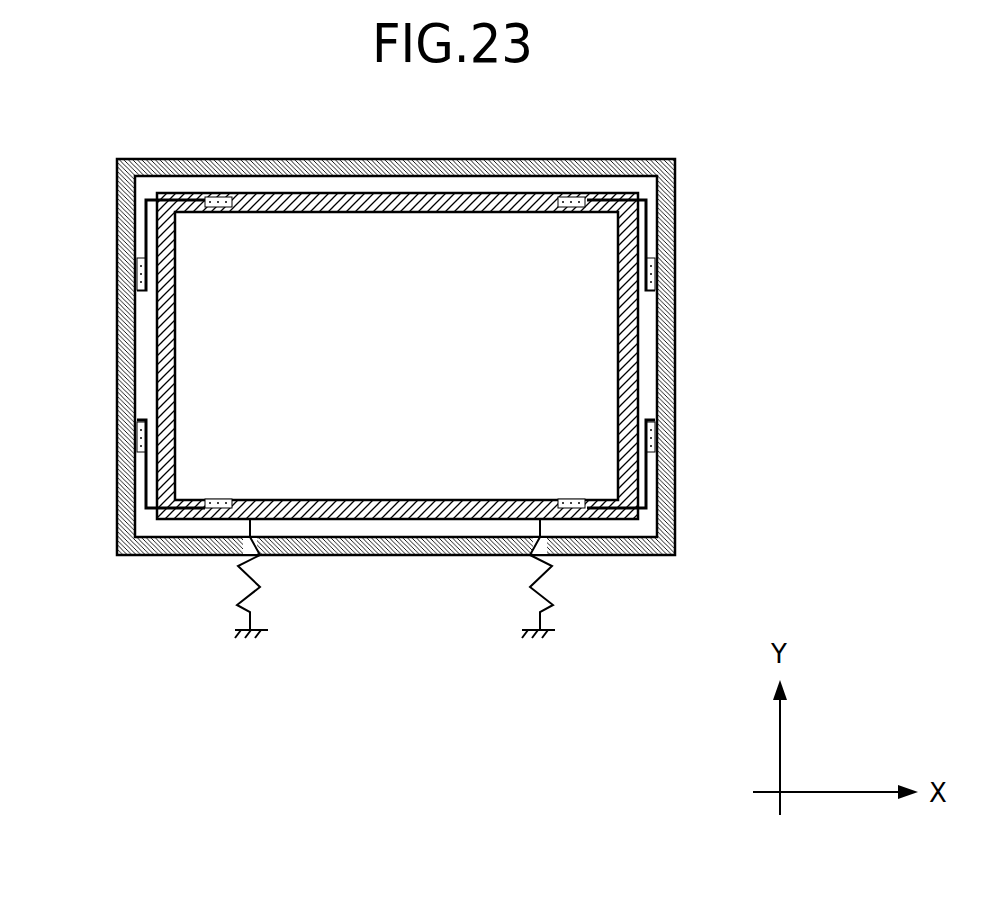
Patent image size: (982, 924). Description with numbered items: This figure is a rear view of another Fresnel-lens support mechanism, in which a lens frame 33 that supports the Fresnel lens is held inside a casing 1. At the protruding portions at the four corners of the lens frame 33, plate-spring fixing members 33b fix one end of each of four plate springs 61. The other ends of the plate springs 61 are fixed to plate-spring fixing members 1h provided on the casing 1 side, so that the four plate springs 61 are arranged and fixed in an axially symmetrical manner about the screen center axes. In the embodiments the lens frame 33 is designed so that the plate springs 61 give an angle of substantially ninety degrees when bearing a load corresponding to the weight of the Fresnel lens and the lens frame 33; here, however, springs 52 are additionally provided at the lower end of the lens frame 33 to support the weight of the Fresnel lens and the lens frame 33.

The casing 1 is at (670, 497).
The plate-spring fixing member 1h is at (120, 273).
The lens frame 33 is at (620, 308).
The plate-spring fixing member 33b is at (208, 197).
The spring 52 is at (255, 613).
The plate spring 61 is at (132, 180).